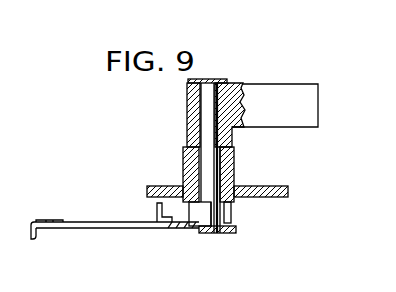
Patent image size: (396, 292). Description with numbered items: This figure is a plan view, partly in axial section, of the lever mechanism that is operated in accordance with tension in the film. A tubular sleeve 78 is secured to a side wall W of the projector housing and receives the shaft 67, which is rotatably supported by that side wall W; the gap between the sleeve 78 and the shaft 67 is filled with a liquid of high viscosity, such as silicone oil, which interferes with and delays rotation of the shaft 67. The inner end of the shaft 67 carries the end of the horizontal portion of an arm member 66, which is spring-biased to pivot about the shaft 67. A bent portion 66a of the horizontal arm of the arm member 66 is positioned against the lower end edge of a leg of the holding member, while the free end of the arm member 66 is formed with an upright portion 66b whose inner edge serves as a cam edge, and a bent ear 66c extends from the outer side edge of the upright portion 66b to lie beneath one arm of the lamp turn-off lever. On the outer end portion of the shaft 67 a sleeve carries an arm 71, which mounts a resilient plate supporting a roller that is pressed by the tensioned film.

The shaft 67 is at (204, 99).
The arm 71 is at (287, 93).
The tubular sleeve 78 is at (233, 161).
The side wall W is at (255, 196).
The arm member 66 is at (130, 229).
The bent portion 66a is at (157, 204).
The upright portion 66b is at (47, 221).
The bent ear 66c is at (38, 233).